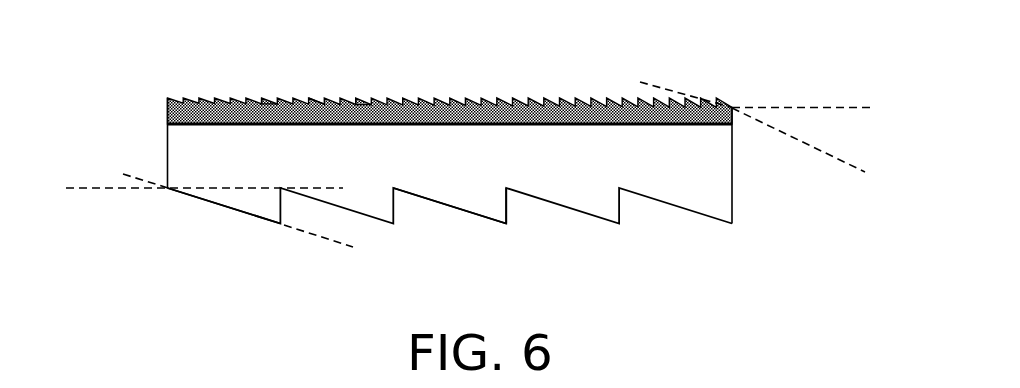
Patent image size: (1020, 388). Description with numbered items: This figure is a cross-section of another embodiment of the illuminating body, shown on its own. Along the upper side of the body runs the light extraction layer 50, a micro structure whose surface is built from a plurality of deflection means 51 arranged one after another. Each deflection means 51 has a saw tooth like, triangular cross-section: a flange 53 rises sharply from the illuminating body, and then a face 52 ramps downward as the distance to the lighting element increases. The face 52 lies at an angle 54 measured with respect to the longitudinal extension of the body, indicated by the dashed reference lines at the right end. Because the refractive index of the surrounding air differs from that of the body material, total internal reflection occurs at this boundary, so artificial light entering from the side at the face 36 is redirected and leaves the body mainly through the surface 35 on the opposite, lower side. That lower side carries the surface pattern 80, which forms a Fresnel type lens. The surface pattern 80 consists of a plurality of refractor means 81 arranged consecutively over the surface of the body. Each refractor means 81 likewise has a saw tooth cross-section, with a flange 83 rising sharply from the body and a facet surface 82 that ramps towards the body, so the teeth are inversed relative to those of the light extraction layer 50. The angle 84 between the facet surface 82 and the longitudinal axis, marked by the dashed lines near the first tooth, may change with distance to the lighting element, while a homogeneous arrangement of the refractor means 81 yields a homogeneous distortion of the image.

The surface pattern 80 is at (768, 256).
The light extraction layer 50 is at (189, 78).
The deflection means 51 is at (362, 98).
The face 52 is at (316, 98).
The flange 53 is at (260, 98).
The angle 54 is at (823, 107).
The light entrance side face 36 is at (187, 147).
The surface 35 is at (681, 191).
The refractor means 81 is at (236, 198).
The facet surface 82 is at (453, 207).
The flange 83 is at (509, 203).
The angle 84 is at (317, 217).